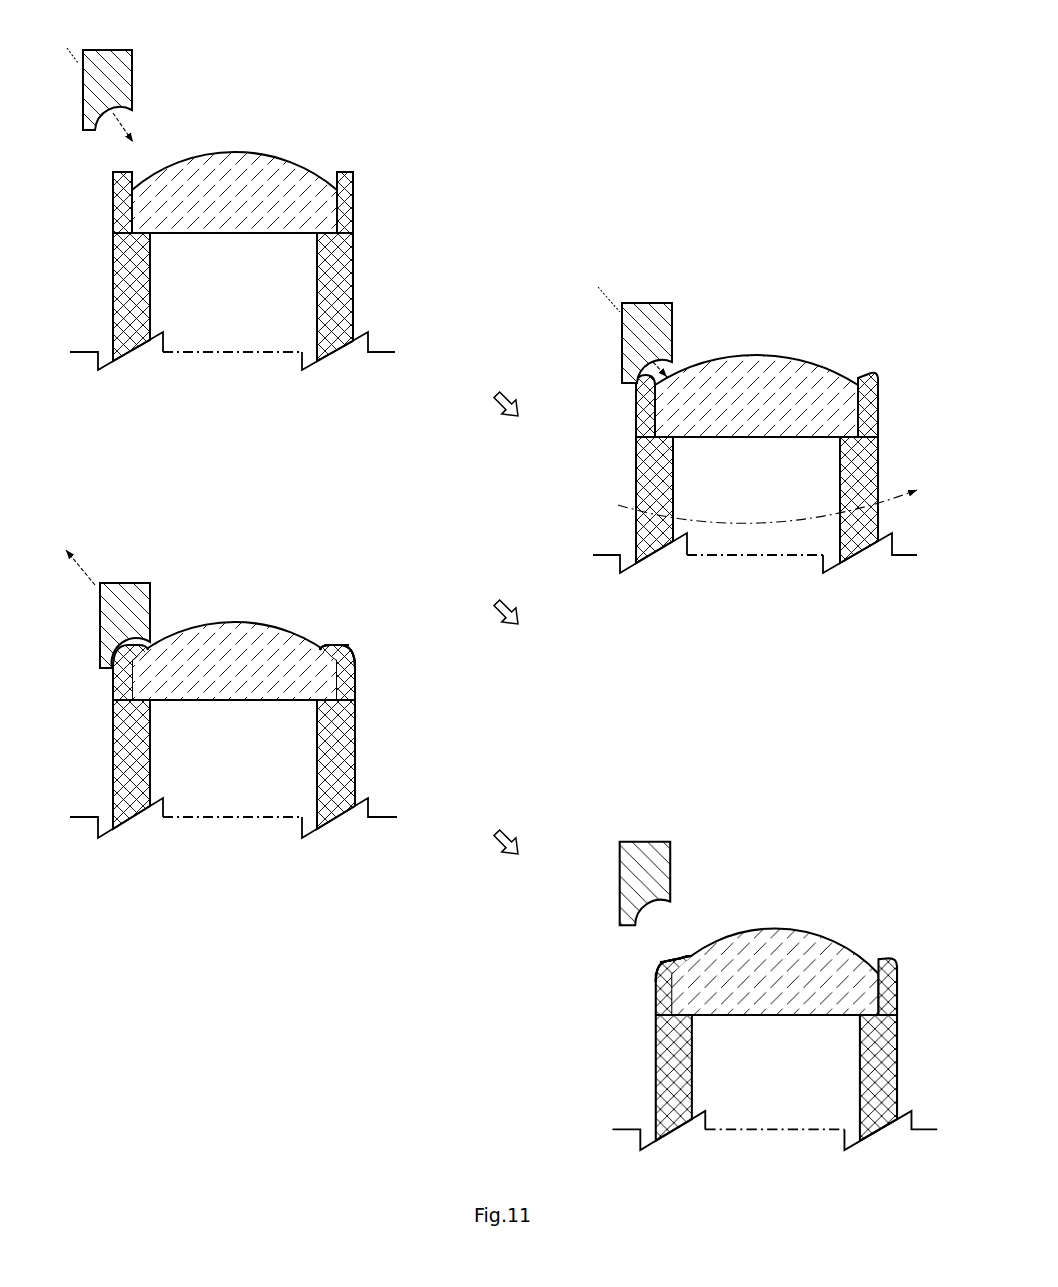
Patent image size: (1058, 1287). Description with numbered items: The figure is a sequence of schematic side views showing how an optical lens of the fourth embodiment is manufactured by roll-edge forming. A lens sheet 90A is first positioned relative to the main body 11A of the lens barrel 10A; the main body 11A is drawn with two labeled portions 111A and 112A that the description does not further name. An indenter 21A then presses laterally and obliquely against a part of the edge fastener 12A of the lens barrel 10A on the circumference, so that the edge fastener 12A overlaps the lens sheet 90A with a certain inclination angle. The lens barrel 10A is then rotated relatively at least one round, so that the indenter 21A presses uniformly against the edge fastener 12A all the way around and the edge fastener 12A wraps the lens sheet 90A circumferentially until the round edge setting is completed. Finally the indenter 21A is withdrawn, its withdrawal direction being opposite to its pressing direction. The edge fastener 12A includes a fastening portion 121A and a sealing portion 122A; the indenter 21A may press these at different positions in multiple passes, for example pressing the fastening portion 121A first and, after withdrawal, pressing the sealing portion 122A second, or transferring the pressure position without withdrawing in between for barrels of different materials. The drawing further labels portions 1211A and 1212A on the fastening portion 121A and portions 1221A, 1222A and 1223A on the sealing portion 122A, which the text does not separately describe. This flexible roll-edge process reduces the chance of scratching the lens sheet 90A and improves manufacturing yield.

The lens barrel 10A is at (382, 352).
The main body 11A is at (505, 656).
The upper wall portion 111A is at (357, 213).
The lower wall portion 112A is at (355, 272).
The edge fastener 12A is at (388, 618).
The fastening portion 121A is at (382, 640).
The outer surface of first bent portion 1211A is at (355, 662).
The top surface of first bent portion 1212A is at (350, 652).
The sealing portion 122A is at (345, 535).
The first surface of second bent portion 1221A is at (347, 647).
The second surface of second bent portion 1222A is at (343, 643).
The end surface of second bent portion 1223A is at (323, 643).
The lens sheet 90A is at (242, 230).
The indenter 21A is at (108, 62).